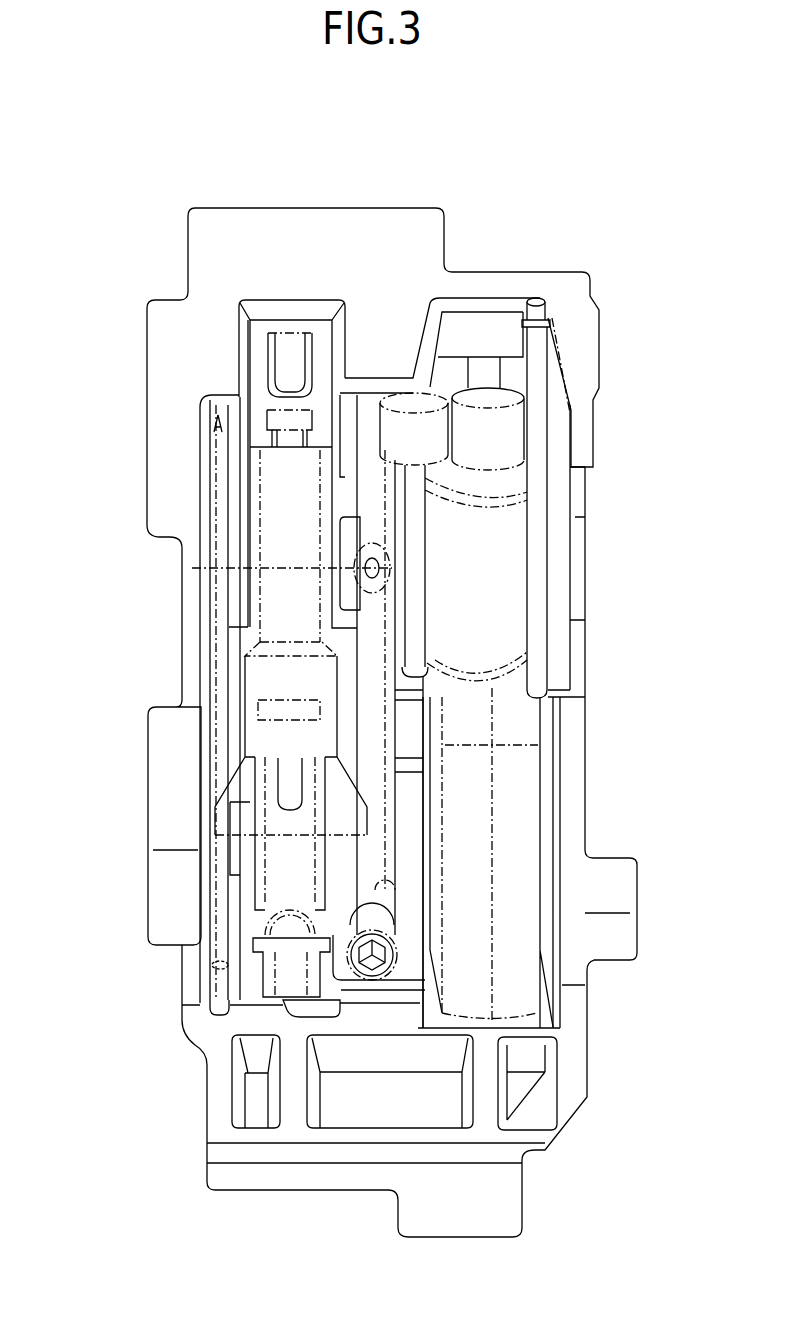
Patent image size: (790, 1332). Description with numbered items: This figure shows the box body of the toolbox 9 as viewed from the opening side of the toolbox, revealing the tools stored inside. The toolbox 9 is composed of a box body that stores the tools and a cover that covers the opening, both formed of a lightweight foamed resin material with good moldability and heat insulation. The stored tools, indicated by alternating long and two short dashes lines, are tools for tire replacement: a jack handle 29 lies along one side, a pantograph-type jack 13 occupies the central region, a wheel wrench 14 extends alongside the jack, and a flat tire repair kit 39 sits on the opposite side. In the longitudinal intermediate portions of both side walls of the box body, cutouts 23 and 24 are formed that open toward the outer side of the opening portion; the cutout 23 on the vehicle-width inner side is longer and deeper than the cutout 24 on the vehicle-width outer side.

The toolbox 9 is at (136, 252).
The pantograph-type jack 13 is at (277, 533).
The wheel wrench 14 is at (372, 857).
The cutout 23 is at (578, 572).
The cutout 24 is at (180, 652).
The jack handle 29 is at (220, 512).
The flat tire repair kit 39 is at (505, 535).